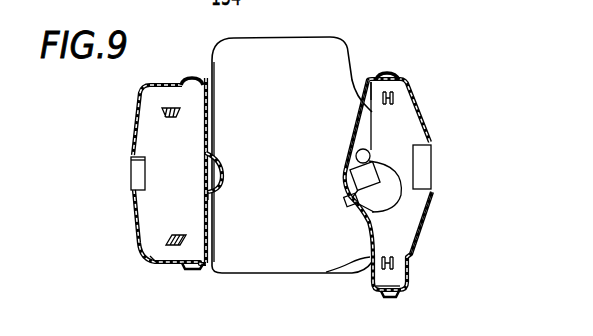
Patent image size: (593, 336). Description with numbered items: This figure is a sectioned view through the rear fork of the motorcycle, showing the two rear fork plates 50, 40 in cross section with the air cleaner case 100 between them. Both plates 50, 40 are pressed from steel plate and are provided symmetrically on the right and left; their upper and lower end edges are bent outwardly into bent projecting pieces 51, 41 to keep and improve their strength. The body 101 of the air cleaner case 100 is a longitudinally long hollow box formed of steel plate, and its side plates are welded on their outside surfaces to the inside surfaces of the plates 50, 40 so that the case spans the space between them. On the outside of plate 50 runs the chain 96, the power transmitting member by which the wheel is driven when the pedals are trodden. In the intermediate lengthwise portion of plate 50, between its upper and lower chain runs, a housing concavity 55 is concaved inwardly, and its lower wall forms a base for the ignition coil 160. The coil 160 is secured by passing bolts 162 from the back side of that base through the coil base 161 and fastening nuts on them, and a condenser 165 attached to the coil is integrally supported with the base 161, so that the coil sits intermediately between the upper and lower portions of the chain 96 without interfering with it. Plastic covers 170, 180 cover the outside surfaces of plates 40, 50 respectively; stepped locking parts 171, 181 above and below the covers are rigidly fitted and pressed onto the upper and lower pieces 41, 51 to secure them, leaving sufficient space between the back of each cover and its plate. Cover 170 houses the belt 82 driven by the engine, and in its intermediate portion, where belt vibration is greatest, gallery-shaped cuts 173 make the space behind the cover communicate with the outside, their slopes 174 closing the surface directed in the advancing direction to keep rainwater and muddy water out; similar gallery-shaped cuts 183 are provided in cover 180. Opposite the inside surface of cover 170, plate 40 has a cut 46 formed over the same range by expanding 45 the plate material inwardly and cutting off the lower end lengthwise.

The air cleaner case 100 is at (300, 53).
The body 101 is at (276, 262).
The rear fork plate 50 is at (328, 273).
The rear fork plate 40 is at (213, 116).
The bent projecting piece 41 is at (204, 78).
The expanded portion 45 is at (222, 173).
The cut 46 is at (217, 187).
The cover 170 is at (139, 235).
The cut 173 is at (139, 171).
The slope 174 is at (131, 165).
The belt 82 is at (158, 265).
The stepped locking part 171 is at (190, 78).
The ignition coil 160 is at (405, 210).
The cover 180 is at (433, 194).
The cut 183 is at (432, 163).
The housing concavity 55 is at (361, 143).
The chain 96 is at (394, 99).
The condenser 165 is at (357, 150).
The base 161 is at (350, 170).
The bolt 162 is at (348, 203).
The bent projecting piece 51 is at (371, 79).
The stepped locking part 181 is at (384, 72).